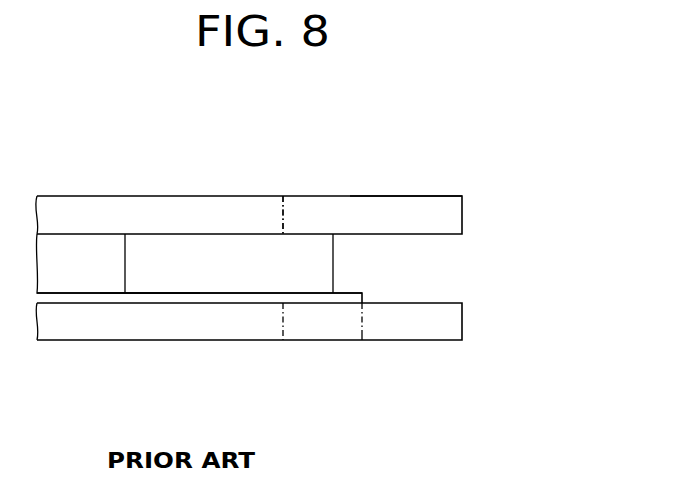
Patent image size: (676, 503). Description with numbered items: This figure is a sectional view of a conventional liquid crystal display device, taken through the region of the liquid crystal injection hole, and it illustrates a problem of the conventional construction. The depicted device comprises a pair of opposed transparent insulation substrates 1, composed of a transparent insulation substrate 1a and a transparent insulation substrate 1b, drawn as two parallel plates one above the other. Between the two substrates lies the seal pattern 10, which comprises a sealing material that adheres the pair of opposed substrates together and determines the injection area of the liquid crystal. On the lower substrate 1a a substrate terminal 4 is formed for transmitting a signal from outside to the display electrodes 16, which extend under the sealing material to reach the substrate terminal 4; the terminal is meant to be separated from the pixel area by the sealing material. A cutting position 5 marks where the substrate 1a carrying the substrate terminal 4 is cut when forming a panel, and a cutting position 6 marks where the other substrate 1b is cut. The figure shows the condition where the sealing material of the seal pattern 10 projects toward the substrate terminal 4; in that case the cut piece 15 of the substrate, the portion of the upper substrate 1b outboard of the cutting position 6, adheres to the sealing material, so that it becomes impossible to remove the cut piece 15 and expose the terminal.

The pair of opposed transparent insulation substrates 1 is at (322, 268).
The transparent insulation substrate 1a is at (438, 325).
The transparent insulation substrate 1b is at (445, 210).
The substrate terminal 4 is at (350, 330).
The cutting position 5 is at (362, 330).
The cutting position 6 is at (283, 200).
The seal pattern 10 is at (173, 255).
The cut piece 15 is at (370, 196).
The display electrodes 16 is at (146, 298).